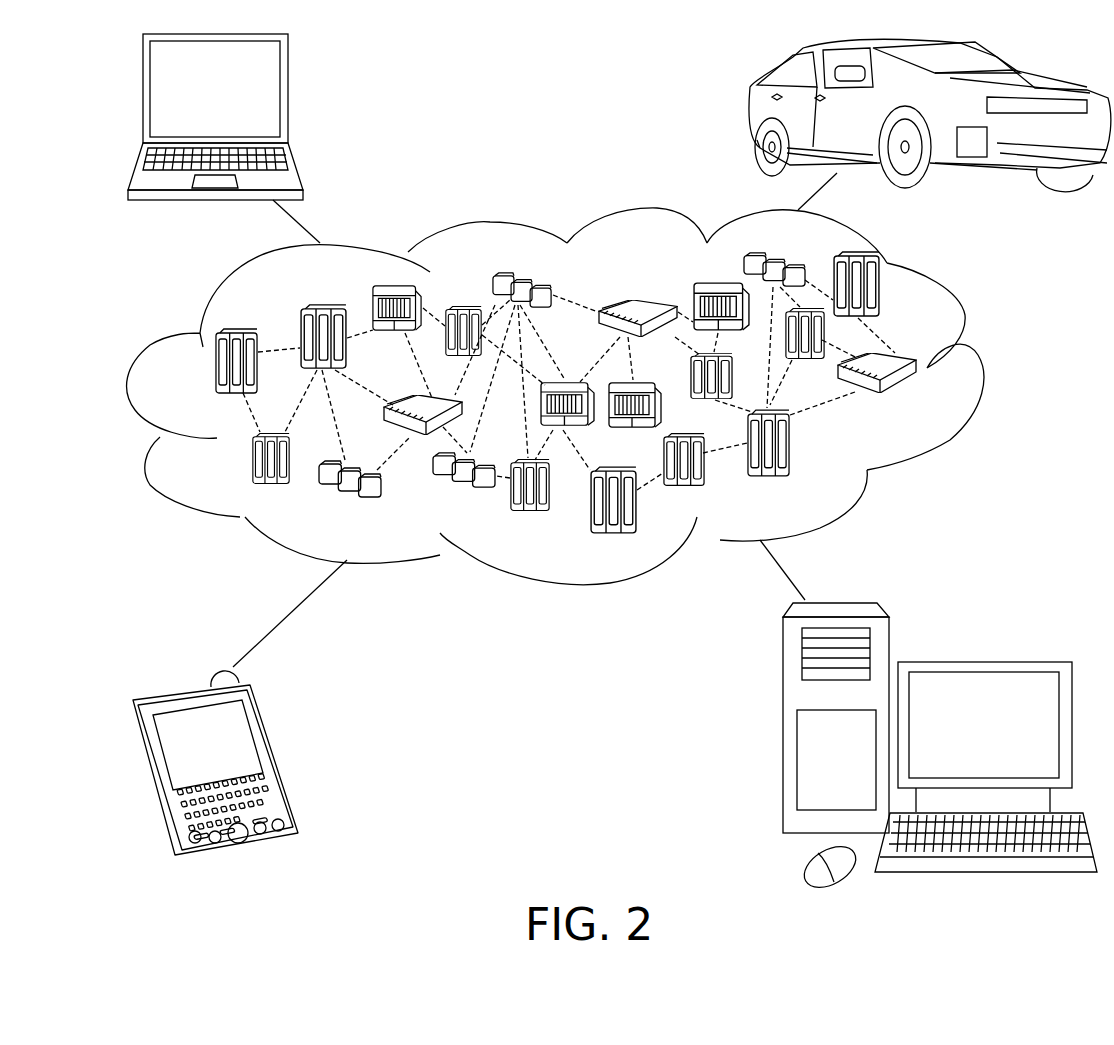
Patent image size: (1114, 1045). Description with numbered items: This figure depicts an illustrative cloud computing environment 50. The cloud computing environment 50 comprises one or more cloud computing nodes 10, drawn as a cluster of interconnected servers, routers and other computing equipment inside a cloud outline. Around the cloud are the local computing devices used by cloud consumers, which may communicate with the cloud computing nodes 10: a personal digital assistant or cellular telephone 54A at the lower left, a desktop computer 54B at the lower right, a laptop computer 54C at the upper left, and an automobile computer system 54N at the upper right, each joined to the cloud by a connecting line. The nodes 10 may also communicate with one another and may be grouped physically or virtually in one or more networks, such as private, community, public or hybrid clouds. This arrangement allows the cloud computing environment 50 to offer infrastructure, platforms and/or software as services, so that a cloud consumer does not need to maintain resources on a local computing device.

The cloud computing node 10 is at (925, 402).
The cloud computing environment 50 is at (983, 372).
The personal digital assistant or cellular telephone 54A is at (277, 754).
The desktop computer 54B is at (980, 662).
The laptop computer 54C is at (288, 99).
The automobile computer system 54N is at (750, 112).